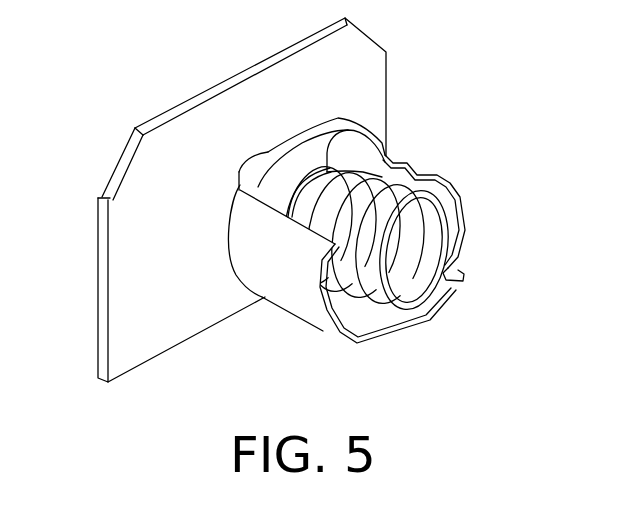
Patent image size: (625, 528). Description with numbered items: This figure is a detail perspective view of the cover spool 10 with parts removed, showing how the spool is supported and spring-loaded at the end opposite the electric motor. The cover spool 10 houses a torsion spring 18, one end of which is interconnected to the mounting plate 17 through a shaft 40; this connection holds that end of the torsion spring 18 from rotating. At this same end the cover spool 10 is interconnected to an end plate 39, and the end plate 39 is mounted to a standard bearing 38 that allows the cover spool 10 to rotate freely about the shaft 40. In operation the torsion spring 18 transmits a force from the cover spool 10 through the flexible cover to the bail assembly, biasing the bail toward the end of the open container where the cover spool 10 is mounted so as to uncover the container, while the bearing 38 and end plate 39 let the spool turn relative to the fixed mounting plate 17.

The cover spool 10 is at (292, 290).
The mounting plate 17 is at (184, 128).
The torsion spring 18 is at (380, 302).
The bearing 38 is at (348, 132).
The end plate 39 is at (298, 137).
The shaft 40 is at (247, 177).